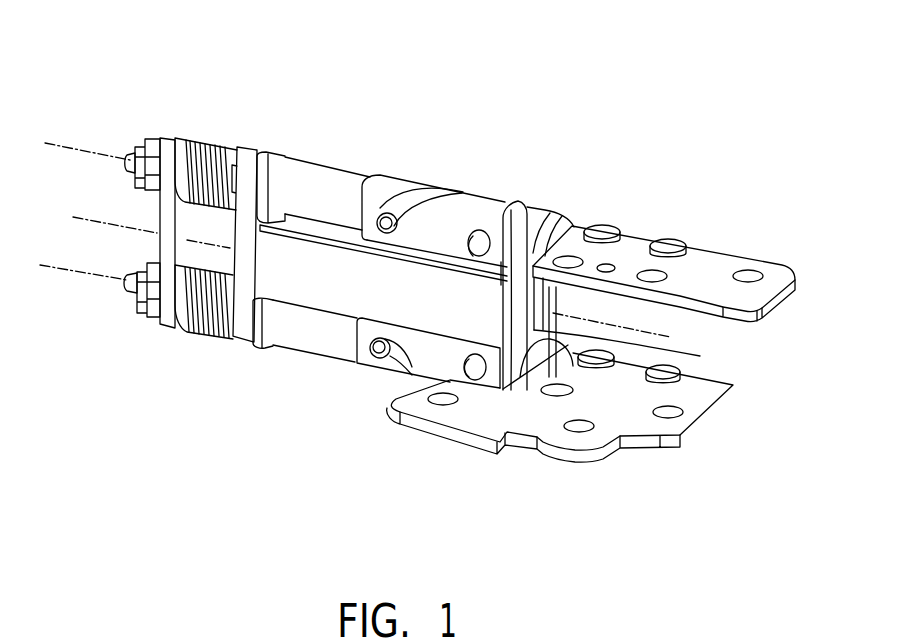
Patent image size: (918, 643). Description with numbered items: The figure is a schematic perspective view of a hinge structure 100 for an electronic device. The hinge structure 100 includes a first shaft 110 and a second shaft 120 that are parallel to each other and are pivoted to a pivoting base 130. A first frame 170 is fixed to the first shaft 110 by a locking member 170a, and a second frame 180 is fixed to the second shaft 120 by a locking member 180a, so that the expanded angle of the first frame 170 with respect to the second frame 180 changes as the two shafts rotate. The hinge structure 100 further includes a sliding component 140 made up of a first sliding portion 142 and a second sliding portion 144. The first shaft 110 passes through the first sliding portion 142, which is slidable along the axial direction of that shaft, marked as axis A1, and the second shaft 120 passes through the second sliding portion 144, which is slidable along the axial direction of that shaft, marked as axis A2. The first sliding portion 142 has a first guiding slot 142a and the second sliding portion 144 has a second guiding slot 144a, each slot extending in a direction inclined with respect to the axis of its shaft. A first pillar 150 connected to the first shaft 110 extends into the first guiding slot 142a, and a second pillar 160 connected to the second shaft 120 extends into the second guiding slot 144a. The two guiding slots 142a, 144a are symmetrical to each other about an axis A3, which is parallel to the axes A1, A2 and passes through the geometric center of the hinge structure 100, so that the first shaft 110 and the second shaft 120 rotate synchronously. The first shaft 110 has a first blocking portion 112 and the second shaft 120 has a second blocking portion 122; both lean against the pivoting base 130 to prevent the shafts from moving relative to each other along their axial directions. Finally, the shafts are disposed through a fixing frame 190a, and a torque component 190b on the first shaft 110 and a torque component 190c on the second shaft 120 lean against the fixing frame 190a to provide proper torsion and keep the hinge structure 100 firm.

The hinge structure 100 is at (802, 28).
The first shaft 110 is at (313, 187).
The first blocking portion 112 is at (553, 223).
The second shaft 120 is at (293, 333).
The second blocking portion 122 is at (522, 340).
The pivoting base 130 is at (700, 356).
The sliding component 140 is at (567, 118).
The first sliding portion 142 is at (478, 210).
The first guiding slot 142a is at (418, 203).
The second sliding portion 144 is at (452, 380).
The second guiding slot 144a is at (398, 369).
The first pillar 150 is at (385, 215).
The second pillar 160 is at (373, 348).
The first frame 170 is at (710, 257).
The locking member 170a is at (670, 241).
The second frame 180 is at (693, 407).
The locking member 180a is at (660, 376).
The fixing frame 190a is at (160, 250).
The torque component 190b is at (221, 137).
The torque component 190c is at (195, 343).
The axis A1 is at (77, 150).
The axis A2 is at (50, 263).
The axis A3 is at (80, 217).